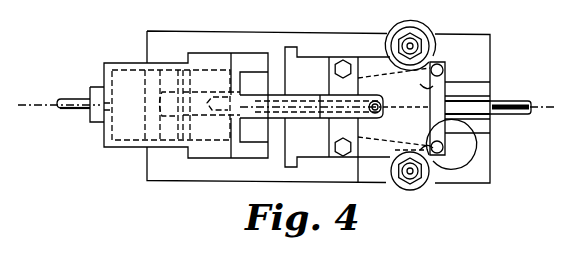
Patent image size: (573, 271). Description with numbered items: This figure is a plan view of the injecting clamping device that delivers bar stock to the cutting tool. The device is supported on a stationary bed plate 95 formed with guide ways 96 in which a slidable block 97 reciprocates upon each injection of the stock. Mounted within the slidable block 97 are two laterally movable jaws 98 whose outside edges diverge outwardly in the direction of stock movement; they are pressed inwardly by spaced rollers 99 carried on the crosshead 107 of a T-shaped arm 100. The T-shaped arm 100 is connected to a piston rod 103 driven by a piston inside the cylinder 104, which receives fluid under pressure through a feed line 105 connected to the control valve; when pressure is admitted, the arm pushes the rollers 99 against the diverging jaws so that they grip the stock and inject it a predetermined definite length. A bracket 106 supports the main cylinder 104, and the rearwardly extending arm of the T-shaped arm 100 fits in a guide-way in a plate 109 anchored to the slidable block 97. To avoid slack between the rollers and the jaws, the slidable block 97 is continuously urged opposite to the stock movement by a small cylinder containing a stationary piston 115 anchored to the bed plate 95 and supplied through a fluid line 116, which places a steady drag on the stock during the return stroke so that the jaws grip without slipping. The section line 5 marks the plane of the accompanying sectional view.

The section line 5- 5 is at (33, 106).
The stationary bed plate 95 is at (471, 183).
The guide ways 96 is at (490, 85).
The slidable block 97 is at (317, 57).
The laterally movable jaws 98 is at (375, 137).
The spaced rollers 99 is at (427, 26).
The T-shaped arm 100 is at (402, 26).
The piston rod 103 is at (298, 95).
The cylinder 104 is at (133, 56).
The feed line 105 is at (63, 99).
The bracket 106 is at (240, 53).
The crosshead 107 is at (450, 86).
The plate 109 is at (357, 183).
The stationary piston 115 is at (468, 122).
The fluid line 116 is at (524, 107).